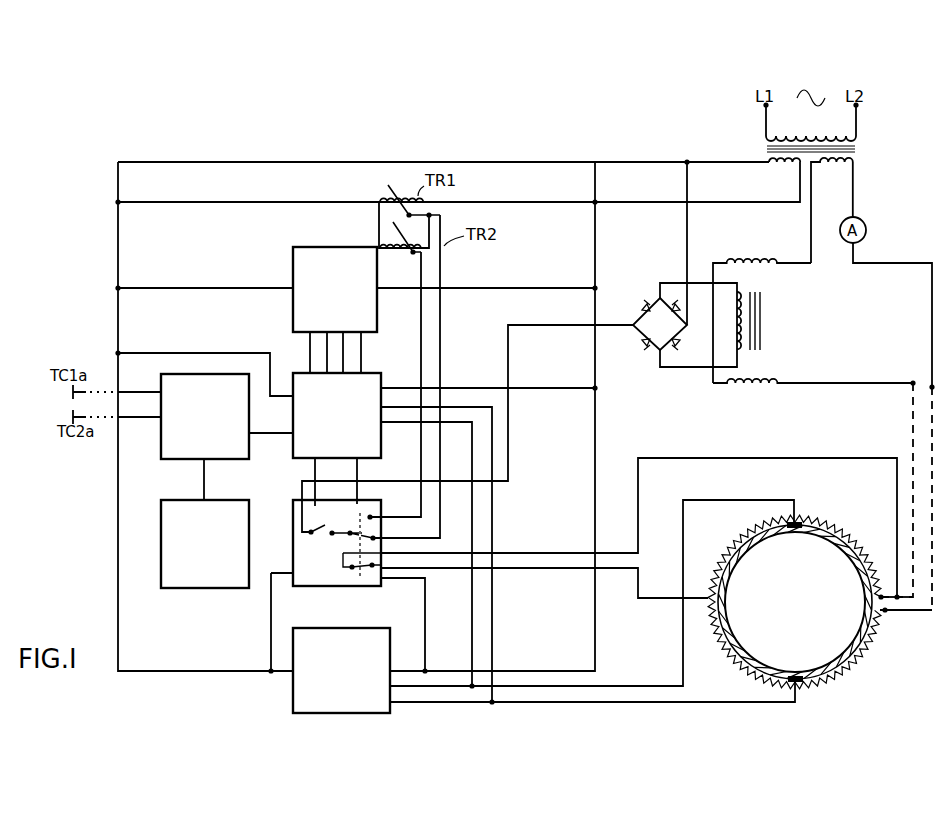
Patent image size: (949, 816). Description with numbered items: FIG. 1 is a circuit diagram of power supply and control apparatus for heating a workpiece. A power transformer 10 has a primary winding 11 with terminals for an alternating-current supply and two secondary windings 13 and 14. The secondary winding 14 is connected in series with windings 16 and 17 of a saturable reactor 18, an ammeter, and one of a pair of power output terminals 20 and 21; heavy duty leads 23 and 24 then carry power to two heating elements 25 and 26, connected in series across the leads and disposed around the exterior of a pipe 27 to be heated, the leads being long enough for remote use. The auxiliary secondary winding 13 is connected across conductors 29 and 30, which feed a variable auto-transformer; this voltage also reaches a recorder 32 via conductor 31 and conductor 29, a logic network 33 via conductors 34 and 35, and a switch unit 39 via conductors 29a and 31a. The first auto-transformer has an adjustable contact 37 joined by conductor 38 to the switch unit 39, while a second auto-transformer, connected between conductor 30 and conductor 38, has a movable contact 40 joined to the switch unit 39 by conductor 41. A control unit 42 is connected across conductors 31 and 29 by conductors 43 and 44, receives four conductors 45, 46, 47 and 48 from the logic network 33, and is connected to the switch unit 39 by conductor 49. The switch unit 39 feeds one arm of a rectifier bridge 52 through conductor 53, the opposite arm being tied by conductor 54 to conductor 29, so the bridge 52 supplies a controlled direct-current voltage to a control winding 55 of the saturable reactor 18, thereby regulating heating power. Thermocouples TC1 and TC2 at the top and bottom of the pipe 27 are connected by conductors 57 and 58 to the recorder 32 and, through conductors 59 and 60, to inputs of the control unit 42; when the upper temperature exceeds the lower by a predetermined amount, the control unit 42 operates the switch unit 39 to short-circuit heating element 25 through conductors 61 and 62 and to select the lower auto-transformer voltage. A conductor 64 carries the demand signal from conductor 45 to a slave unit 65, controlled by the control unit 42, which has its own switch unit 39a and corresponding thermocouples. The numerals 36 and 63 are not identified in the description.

The power transformer 10 is at (837, 182).
The primary winding 11 is at (812, 130).
The auxiliary secondary winding 13 is at (775, 168).
The secondary winding 14 is at (826, 168).
The saturable reactor winding 16 is at (752, 262).
The saturable reactor winding 17 is at (745, 386).
The saturable reactor 18 is at (761, 324).
The power output terminal 20 is at (910, 388).
The power output terminal 21 is at (930, 385).
The heavy duty lead 23 is at (913, 545).
The heavy duty lead 24 is at (932, 565).
The heating element 25 is at (745, 536).
The heating element 26 is at (858, 652).
The pipe 27 is at (740, 556).
The conductor 29 is at (688, 160).
The conductor 29a is at (271, 620).
The conductor 30 is at (697, 202).
The conductor 31 is at (596, 252).
The conductor 31a is at (426, 670).
The recorder 32 is at (390, 638).
The logic network 33 is at (348, 247).
The conductor 34 is at (470, 288).
The conductor 35 is at (242, 289).
The control unit 36 is at (337, 415).
The adjustable contact 37 is at (386, 190).
The conductor 38 is at (442, 338).
The switch unit 39 is at (335, 521).
The switch unit 39a is at (218, 575).
The movable contact 40 is at (404, 234).
The conductor 41 is at (420, 358).
The control unit 42 is at (374, 460).
The conductor 43 is at (536, 388).
The conductor 44 is at (212, 352).
The demand signal conductor 45 is at (308, 342).
The conductor 46 is at (325, 364).
The conductor 47 is at (344, 342).
The conductor 48 is at (362, 368).
The conductor 49 is at (316, 482).
The rectifier bridge 52 is at (651, 300).
The conductor 53 is at (536, 326).
The conductor 54 is at (688, 260).
The control winding 55 is at (745, 346).
The conductor 57 is at (718, 500).
The conductor 58 is at (702, 702).
The conductor 59 is at (471, 614).
The conductor 60 is at (494, 636).
The conductor 61 is at (528, 568).
The conductor 62 is at (530, 553).
The slave unit 63 is at (205, 416).
The conductor 64 is at (260, 433).
The slave unit 65 is at (206, 465).
The thermocouple TC1 is at (802, 520).
The thermocouple TC2 is at (805, 684).